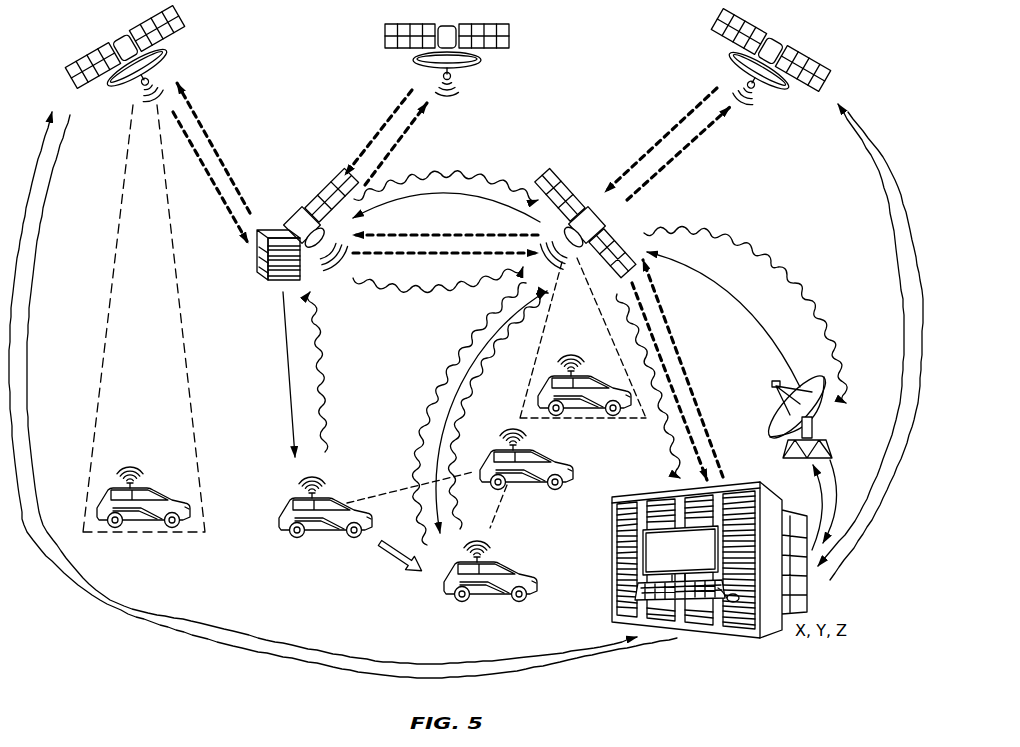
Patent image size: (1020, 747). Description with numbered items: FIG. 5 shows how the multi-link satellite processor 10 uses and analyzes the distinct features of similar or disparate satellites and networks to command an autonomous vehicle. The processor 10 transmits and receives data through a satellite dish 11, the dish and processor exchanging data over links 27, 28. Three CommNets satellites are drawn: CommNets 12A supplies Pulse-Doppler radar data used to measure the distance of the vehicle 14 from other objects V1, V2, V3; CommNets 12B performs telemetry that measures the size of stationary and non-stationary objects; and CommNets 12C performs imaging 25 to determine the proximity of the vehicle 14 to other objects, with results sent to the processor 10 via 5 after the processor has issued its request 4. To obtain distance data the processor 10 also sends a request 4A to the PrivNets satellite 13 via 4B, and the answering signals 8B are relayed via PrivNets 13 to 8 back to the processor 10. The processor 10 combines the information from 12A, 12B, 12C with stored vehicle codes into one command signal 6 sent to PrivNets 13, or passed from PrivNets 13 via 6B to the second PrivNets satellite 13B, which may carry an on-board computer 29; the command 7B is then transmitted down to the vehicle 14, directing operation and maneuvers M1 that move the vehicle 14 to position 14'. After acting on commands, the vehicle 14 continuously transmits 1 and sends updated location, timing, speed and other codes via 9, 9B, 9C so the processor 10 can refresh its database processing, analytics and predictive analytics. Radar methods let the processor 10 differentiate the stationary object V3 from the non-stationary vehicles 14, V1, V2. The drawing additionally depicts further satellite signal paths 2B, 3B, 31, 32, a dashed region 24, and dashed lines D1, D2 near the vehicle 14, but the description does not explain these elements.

The vehicle data transmission 1 is at (427, 410).
The inter-satellite communication link 2B is at (438, 290).
The satellite-to-server link 3B is at (648, 386).
The request to CommNets 4 is at (463, 395).
The request for PrivNets 4A is at (683, 368).
The request link to PrivNets 4B is at (453, 148).
The CommNets downlink to processor 5 is at (465, 384).
The command signal 6 is at (723, 319).
The inter-PrivNets link 6B is at (446, 207).
The command to vehicle 7B is at (407, 412).
The return signal to processor 8 is at (669, 381).
The return signal via PrivNets 8B is at (445, 165).
The updated information transmission 9 is at (470, 414).
The updated information transmission 9B is at (446, 178).
The updated information transmission 9C is at (745, 315).
The multi-link satellite processor 10 is at (699, 560).
The satellite dish 11 is at (794, 413).
The CommNets satellite 12A is at (758, 71).
The CommNets satellite 12B is at (447, 51).
The CommNets satellite 12C is at (136, 68).
The PrivNets satellite 13 is at (571, 236).
The PrivNets satellite 13B is at (329, 219).
The vehicle 14 is at (325, 507).
The vehicle at new position 14' is at (490, 571).
The coverage area of communication satellite 24 is at (583, 338).
The imaging 25 is at (142, 318).
The dish-to-processor communication link 27 is at (812, 507).
The processor-to-dish communication link 28 is at (842, 501).
The on-board computer 29 is at (268, 255).
The inter-satellite link 31 is at (445, 225).
The inter-satellite link 32 is at (445, 265).
The non-stationary object V1 is at (143, 497).
The non-stationary object V2 is at (526, 459).
The stationary object V3 is at (584, 385).
The distance between vehicles D1 is at (410, 487).
The distance between vehicles D2 is at (491, 506).
The operation and maneuvers M1 is at (401, 554).